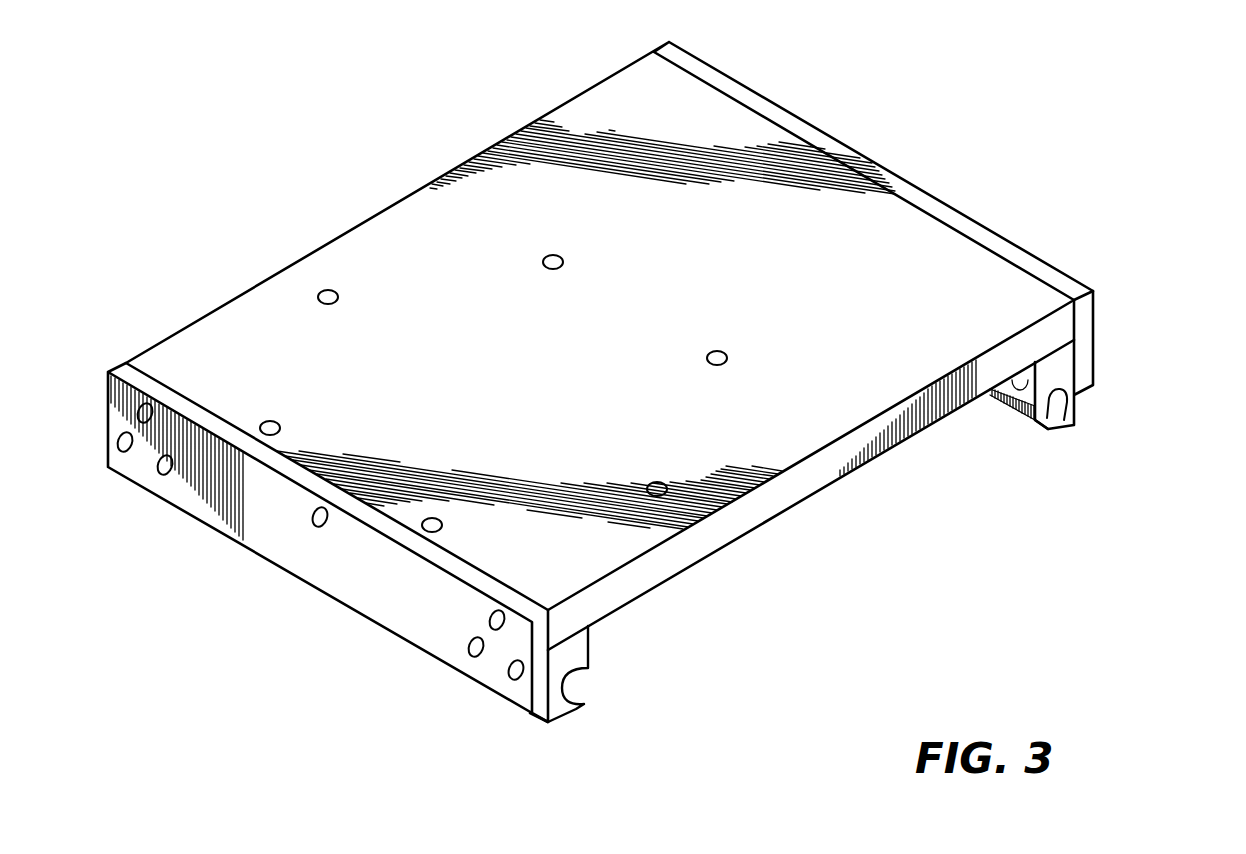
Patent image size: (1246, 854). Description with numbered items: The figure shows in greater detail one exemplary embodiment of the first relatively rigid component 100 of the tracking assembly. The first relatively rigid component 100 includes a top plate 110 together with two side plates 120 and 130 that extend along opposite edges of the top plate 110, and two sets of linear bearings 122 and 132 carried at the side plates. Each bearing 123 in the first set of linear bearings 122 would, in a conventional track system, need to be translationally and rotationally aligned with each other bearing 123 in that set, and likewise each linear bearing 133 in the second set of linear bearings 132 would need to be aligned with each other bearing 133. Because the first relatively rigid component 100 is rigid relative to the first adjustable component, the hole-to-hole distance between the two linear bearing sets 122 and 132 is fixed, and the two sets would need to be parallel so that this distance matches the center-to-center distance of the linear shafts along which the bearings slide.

The first relatively rigid component 100 is at (660, 444).
The top plate 110 is at (395, 248).
The side plate 120 is at (365, 585).
The first set of linear bearings 122 is at (543, 719).
The bearing 123 is at (590, 660).
The side plate 130 is at (1085, 318).
The second set of linear bearings 132 is at (1034, 423).
The linear bearing 133 is at (1076, 403).